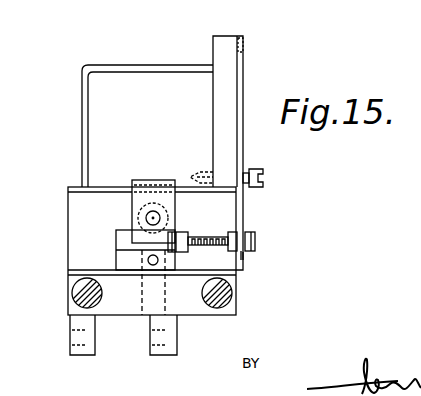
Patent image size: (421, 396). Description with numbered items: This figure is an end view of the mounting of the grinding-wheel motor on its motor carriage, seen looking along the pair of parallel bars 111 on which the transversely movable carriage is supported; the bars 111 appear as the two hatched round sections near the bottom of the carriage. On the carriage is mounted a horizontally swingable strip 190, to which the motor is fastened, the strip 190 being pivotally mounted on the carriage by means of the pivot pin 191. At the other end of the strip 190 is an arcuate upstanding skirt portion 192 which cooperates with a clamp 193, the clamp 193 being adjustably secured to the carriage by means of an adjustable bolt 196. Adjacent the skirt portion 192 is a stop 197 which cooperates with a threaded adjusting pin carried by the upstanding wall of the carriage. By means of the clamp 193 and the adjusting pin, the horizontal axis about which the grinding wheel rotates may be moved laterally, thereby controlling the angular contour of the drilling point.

The parallel bars 111 is at (75, 299).
The horizontally swingable strip 190 is at (127, 257).
The pivot pin 191 is at (153, 300).
The arcuate upstanding skirt portion 192 is at (116, 239).
The clamp 193 is at (162, 165).
The adjustable bolt 196 is at (146, 218).
The stop 197 is at (190, 233).